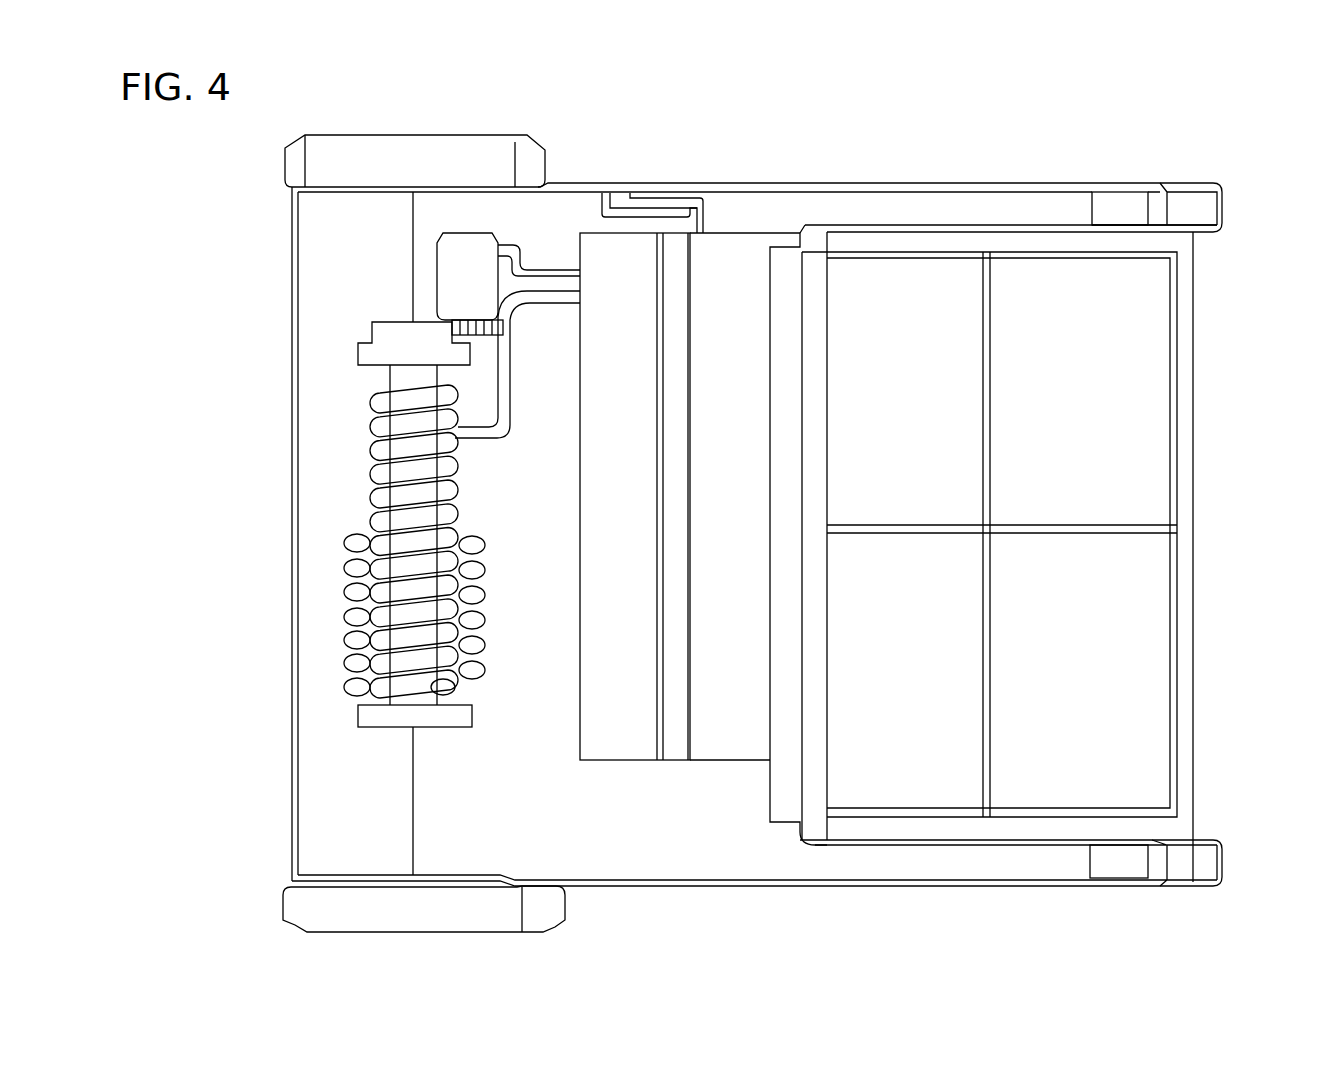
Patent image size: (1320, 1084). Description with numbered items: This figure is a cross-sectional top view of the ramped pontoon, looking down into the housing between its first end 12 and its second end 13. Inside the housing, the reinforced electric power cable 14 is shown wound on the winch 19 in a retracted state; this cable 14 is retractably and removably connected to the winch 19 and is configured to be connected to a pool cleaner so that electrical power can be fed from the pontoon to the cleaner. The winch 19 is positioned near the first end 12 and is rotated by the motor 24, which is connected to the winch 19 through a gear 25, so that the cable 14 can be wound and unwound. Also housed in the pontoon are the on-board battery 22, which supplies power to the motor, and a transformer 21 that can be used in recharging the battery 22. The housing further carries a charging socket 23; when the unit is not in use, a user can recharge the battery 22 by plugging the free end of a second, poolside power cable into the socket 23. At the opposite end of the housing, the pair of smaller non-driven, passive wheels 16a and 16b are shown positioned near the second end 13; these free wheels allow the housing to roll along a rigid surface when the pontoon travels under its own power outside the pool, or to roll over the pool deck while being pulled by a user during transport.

The first end 12 is at (284, 666).
The second end 13 is at (1210, 549).
The electric power cable 14 is at (378, 468).
The non-driven wheel 16a is at (1118, 864).
The non-driven wheel 16b is at (1112, 212).
The winch 19 is at (398, 378).
The transformer 21 is at (640, 245).
The on-board battery 22 is at (740, 245).
The charging socket 23 is at (620, 196).
The motor 24 is at (470, 262).
The gear 25 is at (378, 330).